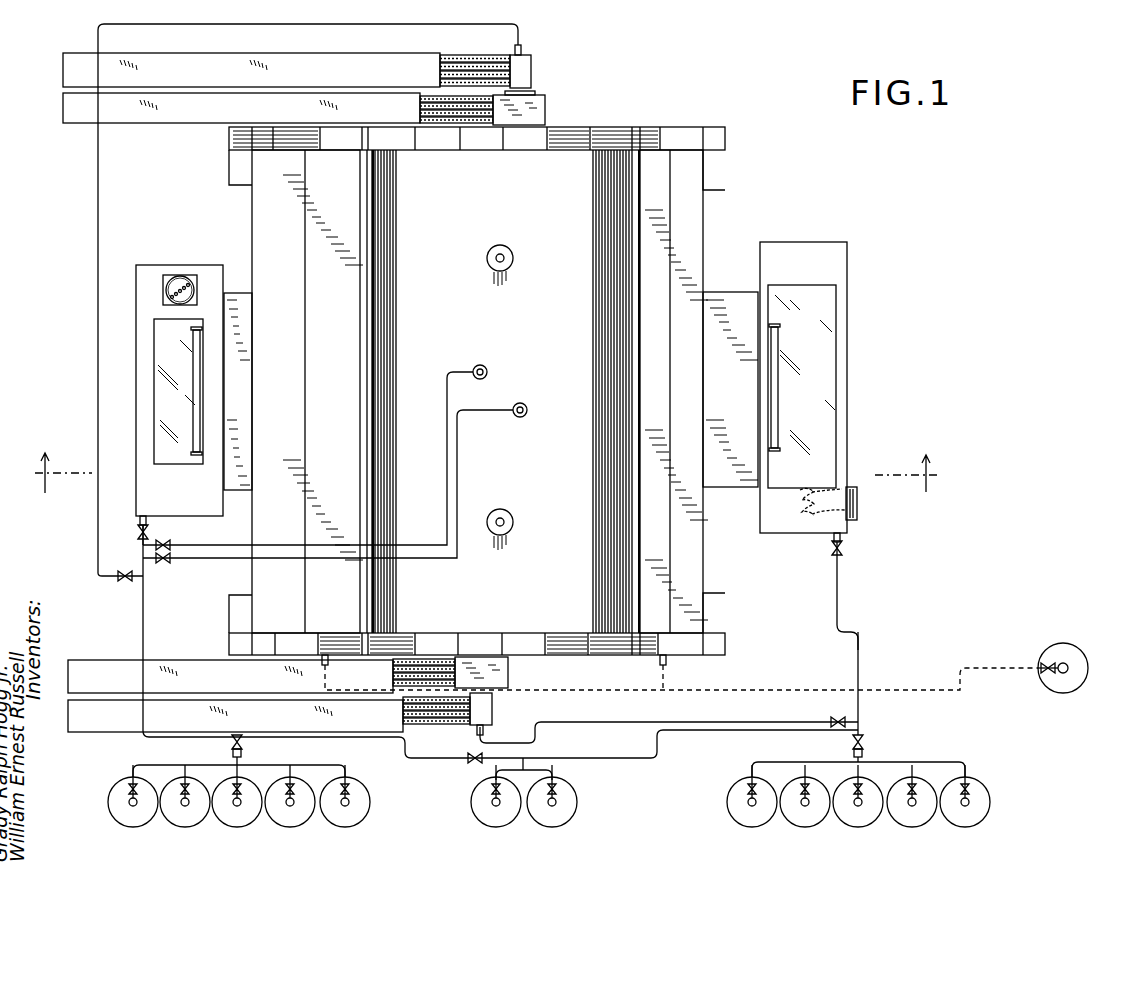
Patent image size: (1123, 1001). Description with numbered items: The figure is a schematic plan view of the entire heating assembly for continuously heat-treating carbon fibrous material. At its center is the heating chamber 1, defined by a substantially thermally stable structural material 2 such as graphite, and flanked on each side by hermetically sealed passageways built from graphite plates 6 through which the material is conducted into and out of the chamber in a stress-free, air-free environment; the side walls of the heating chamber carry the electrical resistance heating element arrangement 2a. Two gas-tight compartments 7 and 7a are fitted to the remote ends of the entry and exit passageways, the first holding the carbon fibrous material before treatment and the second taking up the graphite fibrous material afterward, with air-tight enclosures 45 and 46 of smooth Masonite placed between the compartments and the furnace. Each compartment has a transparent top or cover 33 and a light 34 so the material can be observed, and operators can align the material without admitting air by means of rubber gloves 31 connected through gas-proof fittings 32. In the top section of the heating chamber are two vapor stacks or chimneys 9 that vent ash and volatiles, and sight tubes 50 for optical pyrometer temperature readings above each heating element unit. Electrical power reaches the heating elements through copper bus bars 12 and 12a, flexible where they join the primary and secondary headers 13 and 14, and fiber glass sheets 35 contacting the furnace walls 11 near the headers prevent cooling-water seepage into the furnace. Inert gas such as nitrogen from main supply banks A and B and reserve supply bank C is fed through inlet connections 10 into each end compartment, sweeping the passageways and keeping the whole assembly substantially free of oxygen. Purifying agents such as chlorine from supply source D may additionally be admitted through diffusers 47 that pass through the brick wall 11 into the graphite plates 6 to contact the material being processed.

The heating chamber 1 is at (426, 329).
The thermally stable structural material 2 is at (482, 477).
The heating coil 2a is at (385, 195).
The graphite plates 6 is at (262, 201).
The closed compartment 7 is at (830, 263).
The closed compartment 7a is at (143, 275).
The exhaust stacks or chimneys 9 is at (513, 258).
The inlet connections 10 is at (147, 522).
The brick wall 11 is at (612, 130).
The copper bus bar 12 is at (63, 108).
The copper bus bar 12a is at (63, 62).
The primary header 13 is at (547, 110).
The secondary header 14 is at (532, 72).
The rubber gloves 31 is at (170, 277).
The gas-proof fittings 32 is at (858, 512).
The transparent tops or covers 33 is at (160, 347).
The lights 34 is at (190, 445).
The fiber glass sheets 35 is at (585, 127).
The air-tight enclosure 45 is at (725, 296).
The air-tight enclosure 46 is at (237, 296).
The diffusers 47 is at (328, 668).
The sight tubes 50 is at (487, 368).
The main supply bank A is at (858, 807).
The main supply bank B is at (239, 794).
The reserve supply bank C is at (524, 805).
The purifying agent supply source D is at (1076, 668).